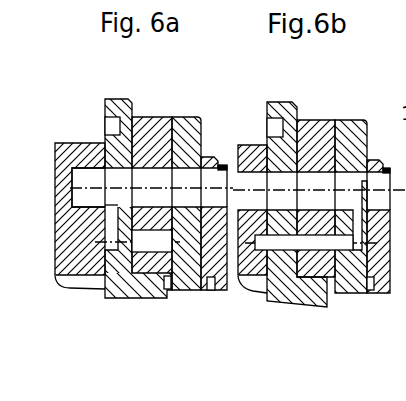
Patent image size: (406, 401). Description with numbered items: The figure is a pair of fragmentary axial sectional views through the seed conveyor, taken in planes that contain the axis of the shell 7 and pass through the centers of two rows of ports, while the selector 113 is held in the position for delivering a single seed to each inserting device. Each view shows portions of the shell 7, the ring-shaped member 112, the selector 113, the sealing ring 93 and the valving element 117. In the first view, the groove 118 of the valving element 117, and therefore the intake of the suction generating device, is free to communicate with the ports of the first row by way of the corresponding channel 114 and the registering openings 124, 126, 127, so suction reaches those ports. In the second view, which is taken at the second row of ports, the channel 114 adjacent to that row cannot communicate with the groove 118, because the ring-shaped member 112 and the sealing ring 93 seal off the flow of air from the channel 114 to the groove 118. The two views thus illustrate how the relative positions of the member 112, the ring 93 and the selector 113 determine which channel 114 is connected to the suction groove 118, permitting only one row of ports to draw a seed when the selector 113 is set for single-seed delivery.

In FIG. 6A, the shell 7 is at (215, 280).
In FIG. 6A, the sealing ring 93 is at (141, 297).
In FIG. 6A, the ring-shaped member 112 is at (197, 287).
In FIG. 6A, the selector 113 is at (160, 127).
In FIG. 6A, the channel 114 is at (218, 180).
In FIG. 6B, the channel 114 is at (384, 182).
In FIG. 6A, the valving element 117 is at (62, 150).
In FIG. 6A, the groove 118 is at (82, 175).
In FIG. 6B, the groove 118 is at (252, 182).
In FIG. 6A, the opening 124 is at (177, 287).
In FIG. 6A, the opening 126 is at (125, 222).
In FIG. 6A, the opening 127 is at (90, 215).